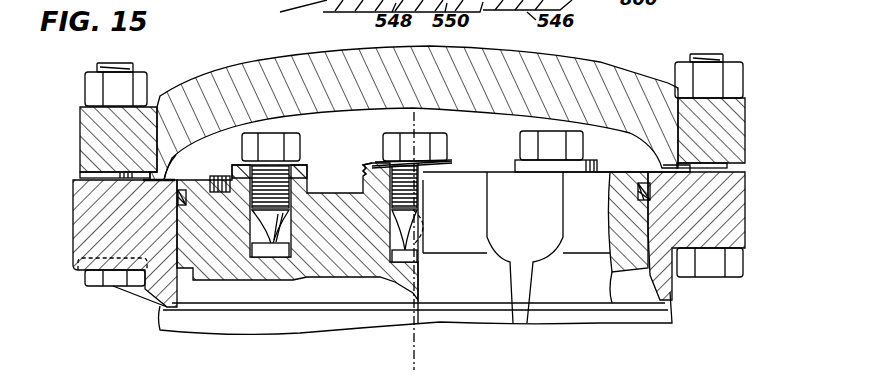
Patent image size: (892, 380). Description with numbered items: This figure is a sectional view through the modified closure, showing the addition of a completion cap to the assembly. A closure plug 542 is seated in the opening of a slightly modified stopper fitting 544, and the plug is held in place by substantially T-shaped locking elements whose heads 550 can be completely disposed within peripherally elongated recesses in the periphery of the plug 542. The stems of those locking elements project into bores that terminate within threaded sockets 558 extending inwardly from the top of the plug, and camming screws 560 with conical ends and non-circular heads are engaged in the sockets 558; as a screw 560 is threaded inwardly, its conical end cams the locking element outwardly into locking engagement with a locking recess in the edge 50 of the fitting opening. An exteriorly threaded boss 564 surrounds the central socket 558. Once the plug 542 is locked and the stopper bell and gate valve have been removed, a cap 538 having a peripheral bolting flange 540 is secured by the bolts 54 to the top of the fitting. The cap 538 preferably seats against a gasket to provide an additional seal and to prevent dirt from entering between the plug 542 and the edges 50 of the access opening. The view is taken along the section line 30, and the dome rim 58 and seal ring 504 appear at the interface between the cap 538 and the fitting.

The section line 30 is at (432, 121).
The edges of the access opening 50 is at (650, 232).
The bolts 54 is at (112, 63).
The dome rim 58 is at (176, 166).
The seal ring 504 is at (648, 183).
The cap 538 is at (595, 66).
The peripheral bolting flange 540 is at (746, 125).
The closure plug 542 is at (328, 278).
The stopper fitting 544 is at (72, 264).
The heads 550 is at (660, 165).
The threaded sockets 558 is at (252, 182).
The camming screws 560 is at (300, 144).
The exteriorly threaded boss 564 is at (372, 172).